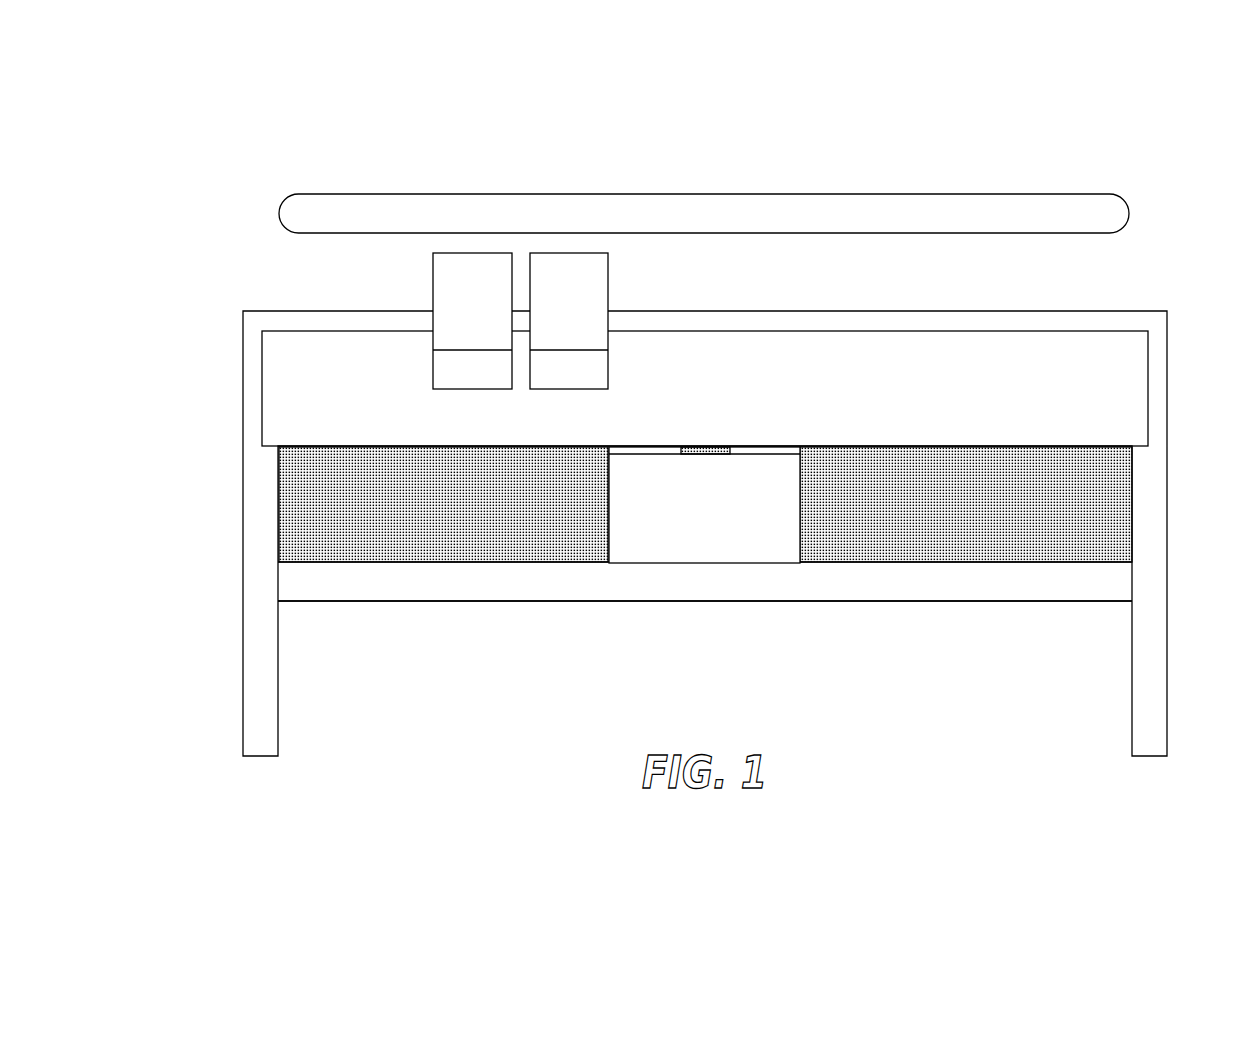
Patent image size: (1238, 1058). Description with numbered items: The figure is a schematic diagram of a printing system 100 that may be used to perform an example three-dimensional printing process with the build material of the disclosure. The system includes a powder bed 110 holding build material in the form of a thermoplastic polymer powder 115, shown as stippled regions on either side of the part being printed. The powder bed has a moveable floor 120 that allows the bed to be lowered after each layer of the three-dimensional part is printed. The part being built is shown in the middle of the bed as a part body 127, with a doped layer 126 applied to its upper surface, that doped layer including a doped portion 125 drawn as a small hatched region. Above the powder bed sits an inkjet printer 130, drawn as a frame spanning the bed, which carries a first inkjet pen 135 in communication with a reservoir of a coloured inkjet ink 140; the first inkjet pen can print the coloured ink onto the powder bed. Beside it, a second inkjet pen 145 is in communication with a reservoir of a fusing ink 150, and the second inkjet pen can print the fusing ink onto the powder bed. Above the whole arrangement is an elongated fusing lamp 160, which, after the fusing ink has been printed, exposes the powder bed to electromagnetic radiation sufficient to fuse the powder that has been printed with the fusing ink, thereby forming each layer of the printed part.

The printing system 100 is at (341, 134).
The powder bed 110 is at (1045, 634).
The thermoplastic polymer powder 115 is at (962, 455).
The moveable floor 120 is at (909, 592).
The doped portion 125 is at (703, 445).
The doped layer 126 is at (770, 445).
The part body 127 is at (705, 545).
The inkjet printer 130 is at (1154, 294).
The first inkjet pen 135 is at (422, 355).
The coloured inkjet ink 140 is at (433, 263).
The second inkjet pen 145 is at (622, 355).
The fusing ink 150 is at (608, 264).
The fusing lamp 160 is at (702, 194).